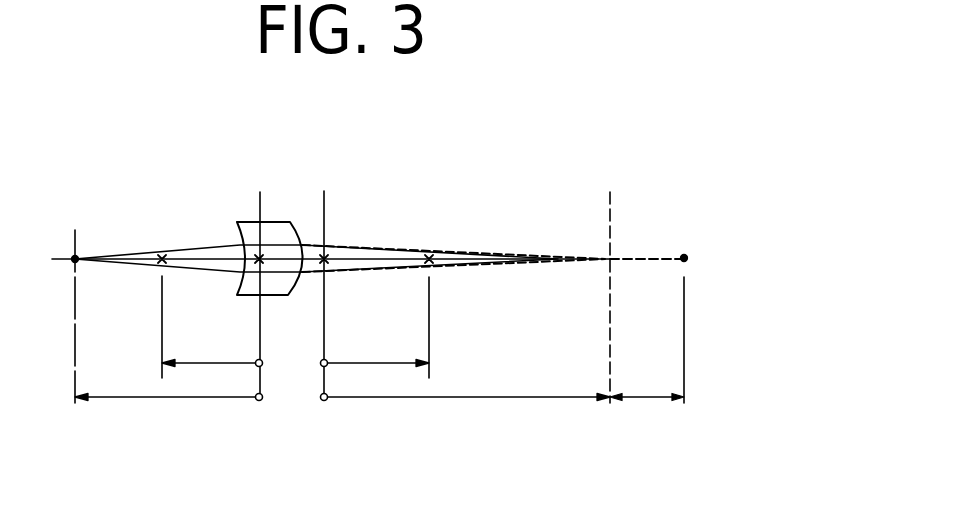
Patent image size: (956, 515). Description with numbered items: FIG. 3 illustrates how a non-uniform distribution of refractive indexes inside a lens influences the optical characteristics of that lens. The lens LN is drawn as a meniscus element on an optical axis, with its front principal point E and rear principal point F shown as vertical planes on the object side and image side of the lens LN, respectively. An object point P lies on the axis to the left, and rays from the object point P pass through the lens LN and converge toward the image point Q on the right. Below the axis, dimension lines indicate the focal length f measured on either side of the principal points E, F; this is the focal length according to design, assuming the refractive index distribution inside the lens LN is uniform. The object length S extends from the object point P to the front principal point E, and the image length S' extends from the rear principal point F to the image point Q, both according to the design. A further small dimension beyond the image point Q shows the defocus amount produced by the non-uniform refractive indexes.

The object point P is at (79, 299).
The front principal point E is at (258, 205).
The lens LN is at (278, 230).
The rear principal point F is at (325, 210).
The image point Q is at (615, 282).
The focal length f is at (295, 327).
The object length S is at (169, 382).
The image length S' is at (466, 382).